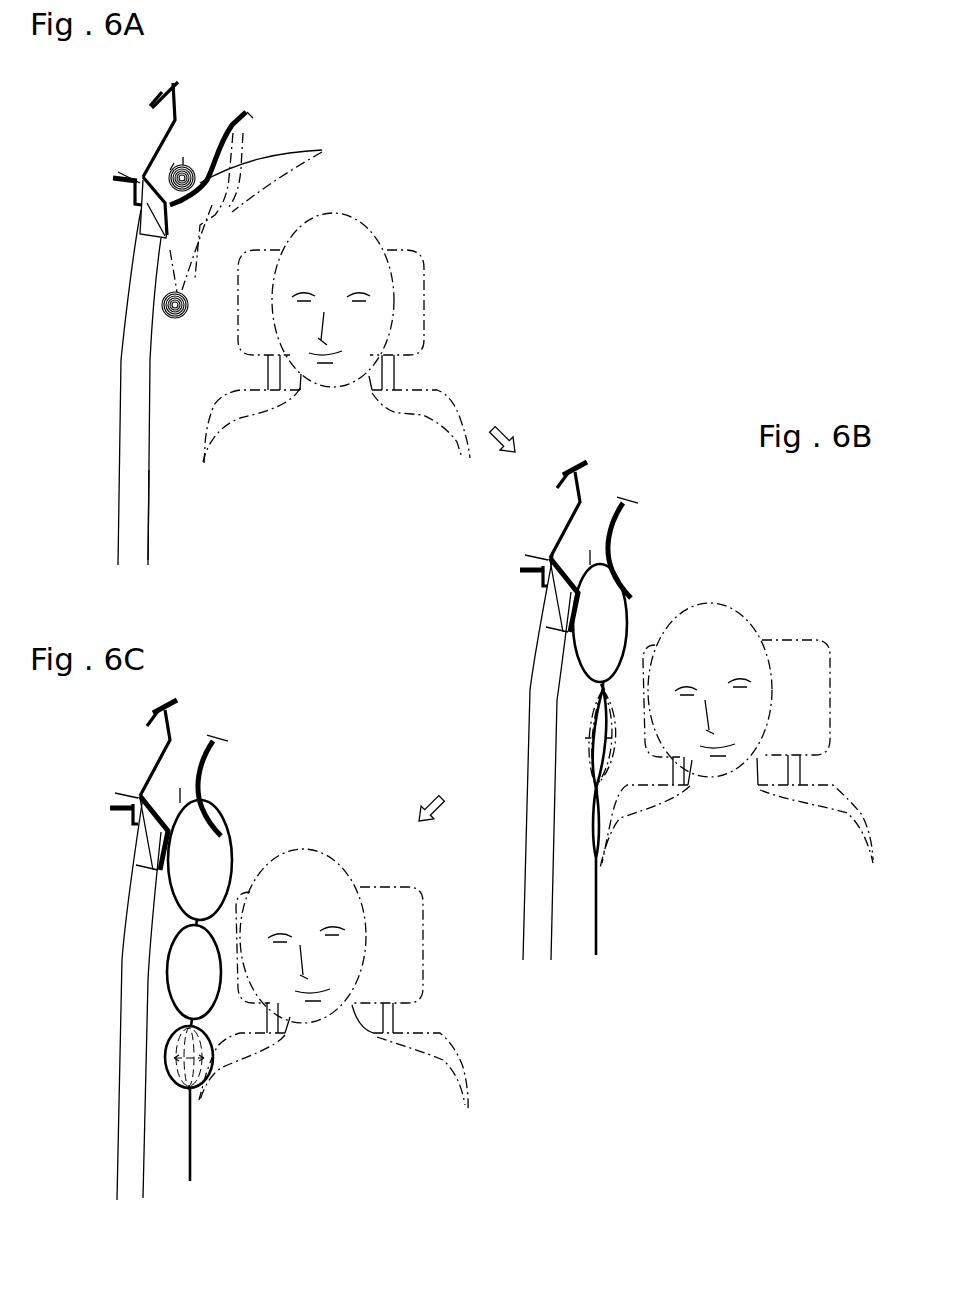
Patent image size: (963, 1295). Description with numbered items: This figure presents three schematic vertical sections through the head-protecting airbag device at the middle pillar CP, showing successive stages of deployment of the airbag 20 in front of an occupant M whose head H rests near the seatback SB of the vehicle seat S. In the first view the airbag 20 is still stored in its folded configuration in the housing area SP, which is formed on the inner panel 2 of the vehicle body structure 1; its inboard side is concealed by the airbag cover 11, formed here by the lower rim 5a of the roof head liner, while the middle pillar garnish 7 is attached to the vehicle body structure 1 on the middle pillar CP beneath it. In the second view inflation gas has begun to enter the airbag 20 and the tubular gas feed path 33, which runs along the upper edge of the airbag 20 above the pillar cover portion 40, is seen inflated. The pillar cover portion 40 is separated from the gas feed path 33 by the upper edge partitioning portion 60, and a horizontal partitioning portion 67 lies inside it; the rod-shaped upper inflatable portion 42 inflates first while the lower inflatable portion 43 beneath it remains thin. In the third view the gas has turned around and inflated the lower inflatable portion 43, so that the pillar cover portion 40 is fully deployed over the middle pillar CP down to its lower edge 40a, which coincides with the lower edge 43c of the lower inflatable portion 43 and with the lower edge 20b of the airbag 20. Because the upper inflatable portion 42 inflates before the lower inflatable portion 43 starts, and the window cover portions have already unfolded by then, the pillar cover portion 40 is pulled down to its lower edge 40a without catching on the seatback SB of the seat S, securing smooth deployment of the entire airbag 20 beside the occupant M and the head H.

In FIG. 6A, the vehicle body structure 1 is at (175, 125).
In FIG. 6A, the inner panel 2 is at (177, 149).
In FIG. 6A, the lower rim of roof head liner 5a is at (298, 170).
In FIG. 6A, the airbag cover 11 is at (298, 170).
In FIG. 6A, the middle pillar garnish 7 is at (148, 470).
In FIG. 6A, the airbag 20 is at (207, 135).
In FIG. 6C, the airbag 20 is at (166, 1158).
In FIG. 6B, the lower edge of airbag 20b is at (597, 950).
In FIG. 6C, the lower edge of airbag 20b is at (191, 1181).
In FIG. 6B, the gas feed path 33 is at (613, 608).
In FIG. 6C, the gas feed path 33 is at (213, 853).
In FIG. 6B, the pillar cover portion 40 is at (598, 722).
In FIG. 6C, the lower edge of pillar cover portion 40a is at (122, 1130).
In FIG. 6B, the upper inflatable portion 42 is at (531, 704).
In FIG. 6C, the upper inflatable portion 42 is at (194, 972).
In FIG. 6B, the lower inflatable portion 43 is at (594, 818).
In FIG. 6C, the lower inflatable portion 43 is at (176, 1057).
In FIG. 6C, the lower edge of lower inflatable portion 43c is at (175, 1083).
In FIG. 6B, the upper edge partitioning portion 60 is at (603, 686).
In FIG. 6B, the horizontal partitioning portion 67 is at (597, 790).
In FIG. 6A, the housing area SP is at (173, 160).
In FIG. 6A, the occupant M is at (397, 256).
In FIG. 6A, the head of occupant H is at (384, 290).
In FIG. 6A, the vehicle seat S is at (395, 357).
In FIG. 6C, the vehicle seat S is at (399, 998).
In FIG. 6A, the seatback SB is at (437, 405).
In FIG. 6C, the seatback SB is at (453, 1058).
In FIG. 6A, the middle pillar CP is at (161, 400).